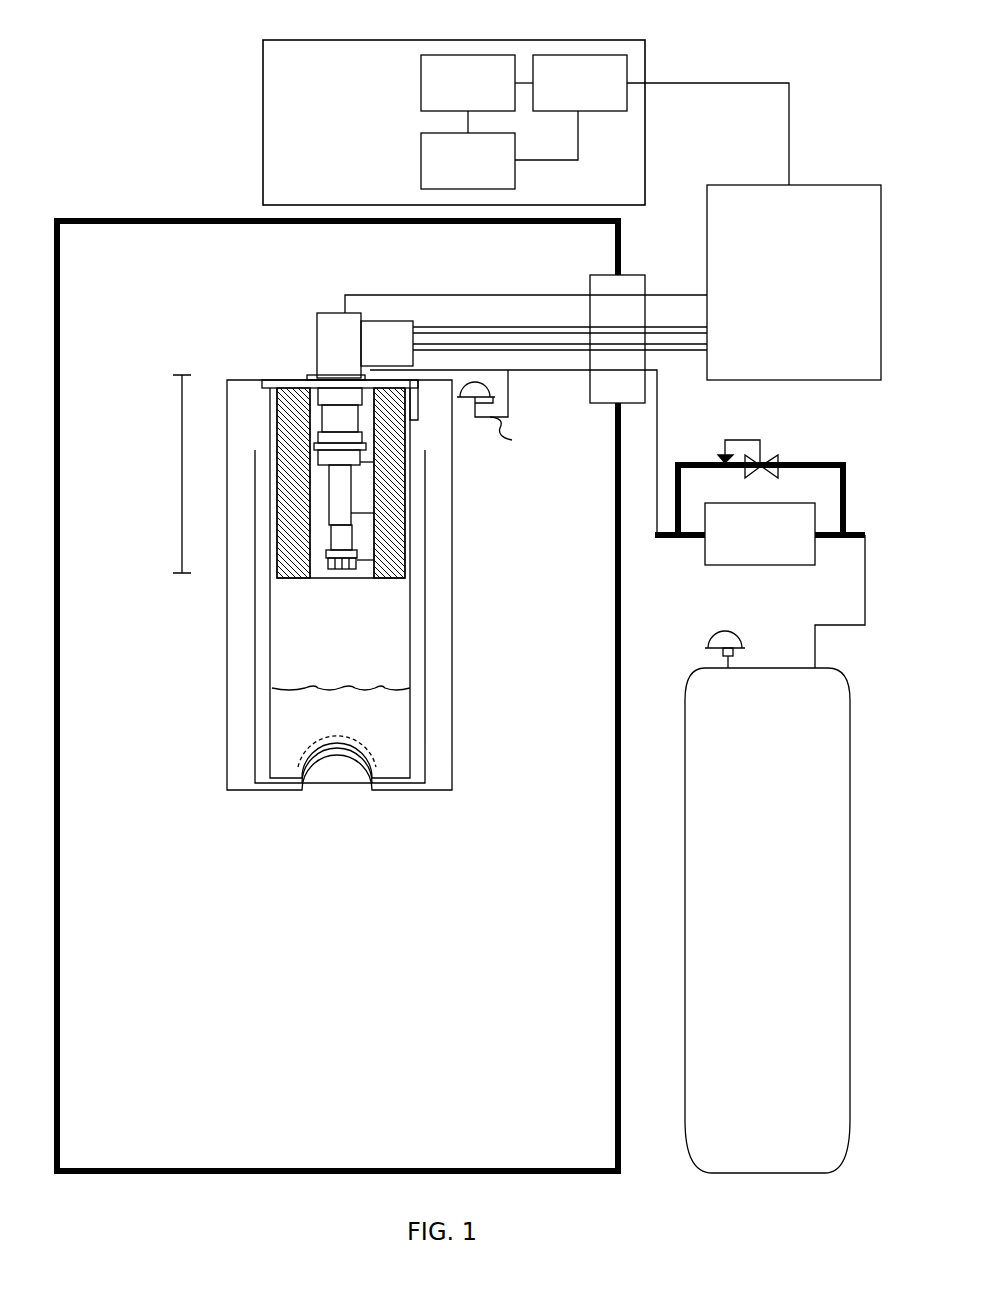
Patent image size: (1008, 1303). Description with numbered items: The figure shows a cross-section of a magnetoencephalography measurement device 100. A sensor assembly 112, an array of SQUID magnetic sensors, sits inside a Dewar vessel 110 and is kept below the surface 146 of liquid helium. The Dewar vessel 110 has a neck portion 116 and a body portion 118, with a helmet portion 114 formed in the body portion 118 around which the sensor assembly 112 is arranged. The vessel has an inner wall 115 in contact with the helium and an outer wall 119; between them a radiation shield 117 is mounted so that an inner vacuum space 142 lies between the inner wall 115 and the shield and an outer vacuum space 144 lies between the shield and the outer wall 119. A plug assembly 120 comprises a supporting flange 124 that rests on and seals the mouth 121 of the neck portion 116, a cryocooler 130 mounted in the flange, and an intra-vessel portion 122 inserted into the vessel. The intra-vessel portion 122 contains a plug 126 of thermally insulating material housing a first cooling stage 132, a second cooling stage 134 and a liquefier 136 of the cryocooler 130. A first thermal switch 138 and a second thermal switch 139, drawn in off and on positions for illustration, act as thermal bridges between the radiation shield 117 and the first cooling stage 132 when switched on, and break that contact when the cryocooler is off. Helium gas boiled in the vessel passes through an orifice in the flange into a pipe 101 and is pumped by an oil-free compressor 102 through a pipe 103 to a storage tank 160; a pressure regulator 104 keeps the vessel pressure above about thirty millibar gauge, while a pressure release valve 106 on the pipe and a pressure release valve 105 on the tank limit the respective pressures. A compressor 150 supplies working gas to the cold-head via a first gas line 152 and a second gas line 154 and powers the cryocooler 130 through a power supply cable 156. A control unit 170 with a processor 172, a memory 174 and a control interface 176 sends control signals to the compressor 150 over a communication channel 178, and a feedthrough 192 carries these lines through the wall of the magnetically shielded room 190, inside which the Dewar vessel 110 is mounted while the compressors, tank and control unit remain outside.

The magnetoencephalography measurement device 100 is at (104, 106).
The pipe 101 is at (540, 370).
The oil-free compressor 102 is at (753, 565).
The pipe 103 is at (852, 623).
The pressure regulator 104 is at (743, 440).
The pressure release valve 105 is at (712, 635).
The pressure release valve 106 is at (512, 385).
The Dewar vessel 110 is at (212, 727).
The sensor assembly 112 is at (335, 737).
The helmet portion 114 is at (347, 780).
The inner wall 115 is at (272, 595).
The neck portion 116 is at (181, 440).
The radiation shield 117 is at (255, 507).
The body portion 118 is at (227, 683).
The outer wall 119 is at (227, 543).
The plug assembly 120 is at (268, 341).
The mouth 121 is at (262, 380).
The intra-vessel portion 122 is at (272, 380).
The supporting flange 124 is at (302, 375).
The plug 126 is at (393, 497).
The cryocooler 130 is at (382, 321).
The first cooling stage 132 is at (373, 440).
The second cooling stage 134 is at (375, 513).
The liquefier 136 is at (373, 560).
The first thermal switch 138 is at (307, 440).
The second thermal switch 139 is at (365, 483).
The inner vacuum space 142 is at (257, 612).
The outer vacuum space 144 is at (257, 637).
The surface of liquid helium 146 is at (378, 687).
The compressor 150 is at (750, 185).
The first gas line 152 is at (553, 327).
The second gas line 154 is at (568, 344).
The power supply cable 156 is at (458, 295).
The storage tank 160 is at (686, 690).
The control unit 170 is at (263, 78).
The processor 172 is at (421, 80).
The memory 174 is at (422, 165).
The control interface 176 is at (627, 96).
The communication channel 178 is at (748, 83).
The magnetically shielded room 190 is at (148, 218).
The feedthrough 192 is at (590, 284).